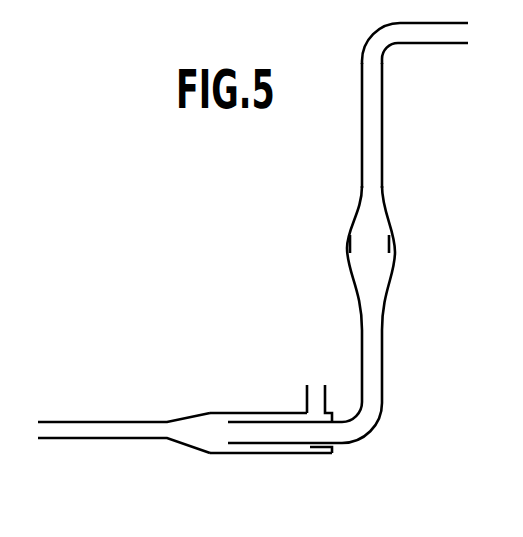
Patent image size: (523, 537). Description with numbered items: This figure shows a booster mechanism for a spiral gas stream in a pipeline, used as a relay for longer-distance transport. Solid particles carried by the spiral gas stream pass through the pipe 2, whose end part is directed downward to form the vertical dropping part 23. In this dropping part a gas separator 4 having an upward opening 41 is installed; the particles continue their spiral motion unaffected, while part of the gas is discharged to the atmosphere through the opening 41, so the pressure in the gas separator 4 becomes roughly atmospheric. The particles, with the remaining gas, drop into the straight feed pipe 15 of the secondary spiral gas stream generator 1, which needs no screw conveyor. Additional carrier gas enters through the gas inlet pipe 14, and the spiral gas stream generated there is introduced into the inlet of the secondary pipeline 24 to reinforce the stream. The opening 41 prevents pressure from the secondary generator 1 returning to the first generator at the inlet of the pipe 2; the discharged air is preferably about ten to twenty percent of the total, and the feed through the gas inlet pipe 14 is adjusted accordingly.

The secondary spiral gas stream generator 1 is at (257, 455).
The pipe 2 is at (433, 45).
The gas separator 4 is at (396, 270).
The gas inlet pipe 14 is at (305, 402).
The feed pipe 15 is at (311, 454).
The vertical dropping part 23 is at (383, 131).
The secondary pipeline 24 is at (112, 421).
The upward opening 41 is at (395, 242).